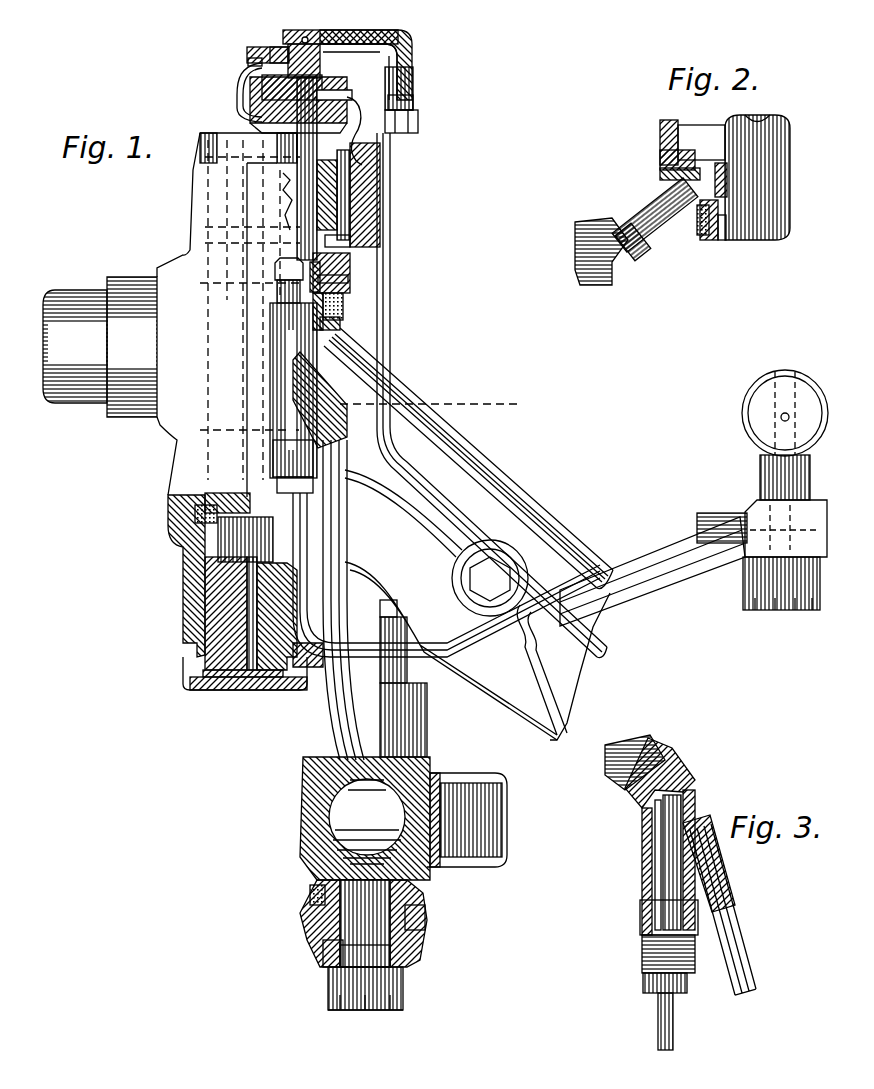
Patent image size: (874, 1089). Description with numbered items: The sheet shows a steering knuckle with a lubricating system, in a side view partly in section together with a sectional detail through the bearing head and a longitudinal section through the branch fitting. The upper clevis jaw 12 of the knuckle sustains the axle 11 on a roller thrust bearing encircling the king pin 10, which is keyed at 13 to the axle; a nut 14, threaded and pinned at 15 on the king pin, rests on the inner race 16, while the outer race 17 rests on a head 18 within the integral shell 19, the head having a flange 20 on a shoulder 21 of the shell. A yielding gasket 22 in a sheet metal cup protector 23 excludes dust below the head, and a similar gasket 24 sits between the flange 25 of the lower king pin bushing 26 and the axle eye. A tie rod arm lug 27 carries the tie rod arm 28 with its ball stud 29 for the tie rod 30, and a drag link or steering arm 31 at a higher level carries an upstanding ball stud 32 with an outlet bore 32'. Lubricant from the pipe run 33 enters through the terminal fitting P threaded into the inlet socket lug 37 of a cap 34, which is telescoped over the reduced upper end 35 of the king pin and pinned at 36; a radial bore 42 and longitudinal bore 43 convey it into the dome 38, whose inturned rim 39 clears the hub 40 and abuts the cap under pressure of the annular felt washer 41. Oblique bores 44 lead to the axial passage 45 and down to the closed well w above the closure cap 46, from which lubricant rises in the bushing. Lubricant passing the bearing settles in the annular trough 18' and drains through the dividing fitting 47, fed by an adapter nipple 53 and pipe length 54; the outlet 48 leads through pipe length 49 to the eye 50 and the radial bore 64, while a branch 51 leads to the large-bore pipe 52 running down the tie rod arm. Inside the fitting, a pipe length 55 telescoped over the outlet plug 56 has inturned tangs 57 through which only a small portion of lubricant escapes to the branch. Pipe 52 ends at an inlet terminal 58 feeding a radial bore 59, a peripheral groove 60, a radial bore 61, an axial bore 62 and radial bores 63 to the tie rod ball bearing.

In FIG. 1, the king pin 10 is at (392, 225).
In FIG. 2, the king pin 10 is at (790, 175).
In FIG. 1, the axle 11 is at (455, 420).
In FIG. 1, the upper clevis jaw 12 is at (198, 200).
In FIG. 1, the key 13 is at (460, 432).
In FIG. 1, the nut 14 is at (418, 121).
In FIG. 1, the pin 15 is at (262, 108).
In FIG. 1, the inner race 16 is at (352, 200).
In FIG. 1, the outer race 17 is at (380, 190).
In FIG. 1, the head 18 is at (346, 308).
In FIG. 2, the head 18 is at (750, 249).
In FIG. 1, the annular trough 18' is at (399, 258).
In FIG. 1, the shell 19 is at (350, 258).
In FIG. 2, the shell 19 is at (660, 138).
In FIG. 1, the flange 20 is at (348, 268).
In FIG. 2, the flange 20 is at (662, 158).
In FIG. 1, the shoulder 21 is at (345, 279).
In FIG. 2, the shoulder 21 is at (668, 174).
In FIG. 1, the yielding gasket 22 is at (340, 297).
In FIG. 2, the yielding gasket 22 is at (712, 240).
In FIG. 1, the sheet metal cup protector 23 is at (334, 315).
In FIG. 2, the sheet metal cup protector 23 is at (703, 245).
In FIG. 1, the gasket 24 is at (215, 500).
In FIG. 1, the flange 25 is at (218, 530).
In FIG. 1, the lower king pin bushing 26 is at (270, 585).
In FIG. 1, the tie rod arm lug 27 is at (308, 668).
In FIG. 1, the tie rod arm 28 is at (427, 727).
In FIG. 1, the ball stud 29 is at (425, 925).
In FIG. 1, the tie rod 30 is at (480, 775).
In FIG. 1, the drag link or steering arm 31 is at (640, 560).
In FIG. 1, the ball stud 32 is at (759, 470).
In FIG. 1, the outlet bore 32' is at (798, 410).
In FIG. 1, the pipe run 33 is at (478, 522).
In FIG. 1, the cap 34 is at (278, 50).
In FIG. 1, the reduced upper end 35 is at (322, 46).
In FIG. 1, the pin 36 is at (306, 37).
In FIG. 1, the inlet socket lug 37 is at (413, 85).
In FIG. 1, the dome 38 is at (238, 90).
In FIG. 1, the inturned rim 39 is at (248, 62).
In FIG. 1, the hub 40 is at (265, 95).
In FIG. 1, the annular felt washer 41 is at (262, 50).
In FIG. 1, the radial bore 42 is at (412, 52).
In FIG. 1, the longitudinal bore 43 is at (386, 37).
In FIG. 1, the oblique bores 44 is at (310, 98).
In FIG. 1, the axial passage 45 is at (225, 570).
In FIG. 2, the axial passage 45 is at (765, 122).
In FIG. 1, the closure cap 46 is at (230, 690).
In FIG. 1, the dividing fitting 47 is at (317, 360).
In FIG. 2, the dividing fitting 47 is at (585, 262).
In FIG. 3, the dividing fitting 47 is at (695, 785).
In FIG. 1, the outlet 48 is at (273, 462).
In FIG. 3, the outlet 48 is at (645, 920).
In FIG. 1, the pipe length 49 is at (252, 620).
In FIG. 3, the pipe length 49 is at (670, 1010).
In FIG. 1, the eye 50 is at (732, 515).
In FIG. 1, the branch 51 is at (345, 410).
In FIG. 3, the branch 51 is at (705, 870).
In FIG. 1, the pipe 52 is at (348, 570).
In FIG. 3, the pipe 52 is at (748, 958).
In FIG. 2, the adapter nipple 53 is at (665, 228).
In FIG. 1, the pipe length 54 is at (280, 290).
In FIG. 2, the pipe length 54 is at (637, 255).
In FIG. 3, the pipe length 54 is at (620, 760).
In FIG. 3, the pipe length 55 is at (655, 895).
In FIG. 1, the outlet plug 56 is at (200, 508).
In FIG. 3, the outlet plug 56 is at (665, 940).
In FIG. 3, the inturned tangs 57 is at (660, 868).
In FIG. 1, the inlet terminal 58 is at (330, 945).
In FIG. 1, the radial bore 59 is at (318, 895).
In FIG. 1, the peripheral groove 60 is at (415, 950).
In FIG. 1, the radial bore 61 is at (340, 975).
In FIG. 1, the axial bore 62 is at (425, 885).
In FIG. 1, the radial bores 63 is at (303, 845).
In FIG. 1, the radial bore 64 is at (745, 590).
In FIG. 1, the terminal fitting P is at (413, 100).
In FIG. 1, the closed well w is at (257, 690).